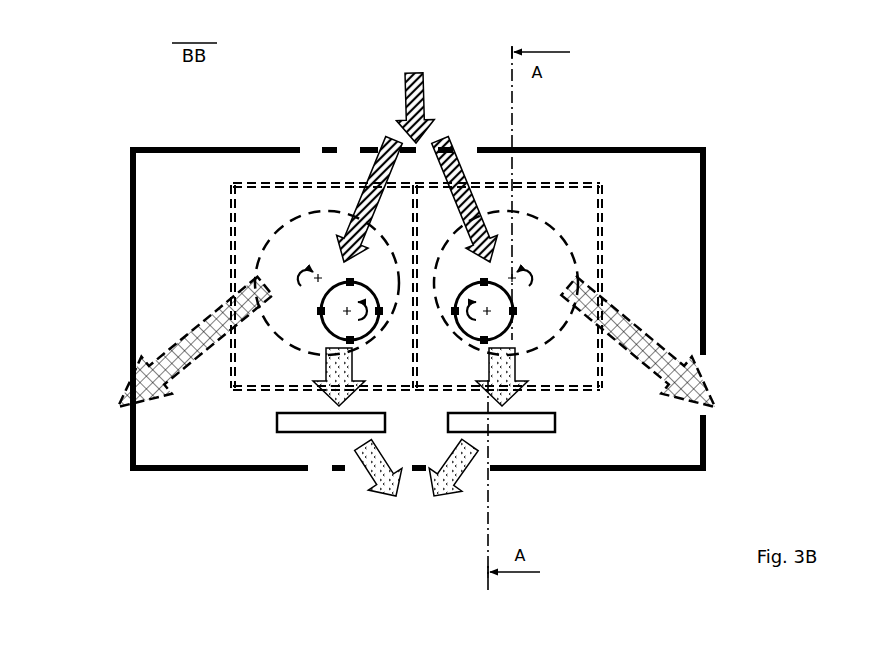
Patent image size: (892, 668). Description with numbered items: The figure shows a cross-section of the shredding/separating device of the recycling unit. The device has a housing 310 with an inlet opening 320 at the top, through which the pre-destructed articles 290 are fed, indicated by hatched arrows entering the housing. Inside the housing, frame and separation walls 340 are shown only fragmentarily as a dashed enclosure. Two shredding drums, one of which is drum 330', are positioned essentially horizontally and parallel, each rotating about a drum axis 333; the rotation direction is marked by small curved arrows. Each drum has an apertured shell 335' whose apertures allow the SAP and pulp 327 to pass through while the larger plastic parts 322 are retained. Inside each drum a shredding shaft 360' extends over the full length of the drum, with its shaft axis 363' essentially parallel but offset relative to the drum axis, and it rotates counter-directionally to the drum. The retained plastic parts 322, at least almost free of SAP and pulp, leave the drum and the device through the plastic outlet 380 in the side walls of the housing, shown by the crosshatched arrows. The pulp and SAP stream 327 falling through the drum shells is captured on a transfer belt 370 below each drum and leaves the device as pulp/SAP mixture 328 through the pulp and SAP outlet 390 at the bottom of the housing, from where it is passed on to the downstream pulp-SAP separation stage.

The pre-destructed articles 290 is at (335, 245).
The housing 310 is at (707, 182).
The inlet opening 320 is at (465, 152).
The plastic parts 322 is at (167, 366).
The SAP and pulp stream 327 is at (338, 363).
The pulp/SAP mixture 328 is at (366, 470).
The shredding drum 330' is at (299, 224).
The drum axis 333 is at (180, 257).
The apertured shell 335' is at (201, 173).
The frame and separation walls 340 is at (609, 237).
The shredding shaft 360' is at (209, 395).
The shredding shaft axis 363' is at (311, 207).
The transfer belt 370 is at (327, 426).
The plastic outlet 380 is at (120, 405).
The pulp and SAP outlet 390 is at (413, 473).